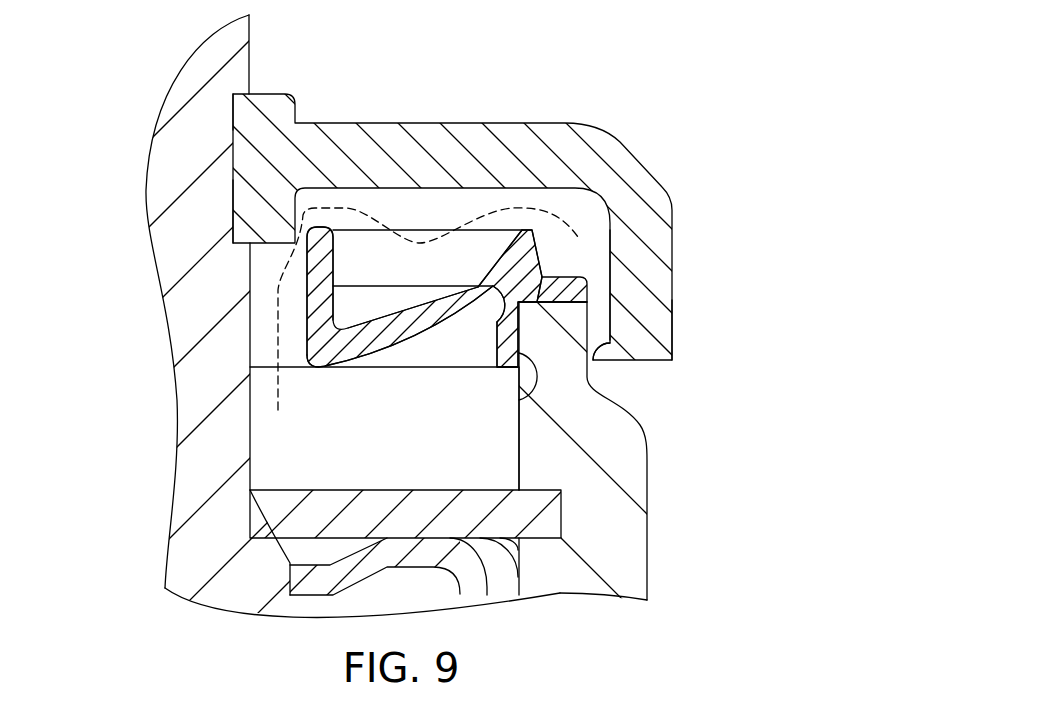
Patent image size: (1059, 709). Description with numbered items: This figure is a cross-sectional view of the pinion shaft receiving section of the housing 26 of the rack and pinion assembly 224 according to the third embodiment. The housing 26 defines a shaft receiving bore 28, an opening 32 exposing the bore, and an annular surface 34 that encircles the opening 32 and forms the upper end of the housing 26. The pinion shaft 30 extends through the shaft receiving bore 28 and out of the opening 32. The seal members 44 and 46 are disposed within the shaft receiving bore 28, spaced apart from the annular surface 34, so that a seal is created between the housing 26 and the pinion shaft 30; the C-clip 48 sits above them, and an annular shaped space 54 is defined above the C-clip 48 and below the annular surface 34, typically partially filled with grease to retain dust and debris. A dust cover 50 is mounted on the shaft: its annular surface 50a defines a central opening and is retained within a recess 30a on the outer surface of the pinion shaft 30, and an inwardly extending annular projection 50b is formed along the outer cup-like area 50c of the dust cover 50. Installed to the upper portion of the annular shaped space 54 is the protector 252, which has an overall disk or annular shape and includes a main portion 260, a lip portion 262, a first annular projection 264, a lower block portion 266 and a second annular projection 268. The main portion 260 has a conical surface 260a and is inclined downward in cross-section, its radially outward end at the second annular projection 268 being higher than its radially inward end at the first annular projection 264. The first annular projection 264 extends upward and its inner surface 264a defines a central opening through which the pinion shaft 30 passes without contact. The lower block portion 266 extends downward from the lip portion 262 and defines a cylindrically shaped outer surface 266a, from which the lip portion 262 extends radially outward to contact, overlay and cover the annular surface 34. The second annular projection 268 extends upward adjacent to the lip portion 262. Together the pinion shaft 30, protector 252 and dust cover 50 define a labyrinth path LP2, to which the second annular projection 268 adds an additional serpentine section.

The pinion shaft 30 is at (230, 42).
The recess 30a is at (235, 125).
The rack and pinion assembly 224 is at (576, 77).
The dust cover 50 is at (477, 157).
The annular surface 50a is at (233, 203).
The inwardly extending annular projection 50b is at (595, 347).
The outer cup-like area 50c is at (640, 329).
The lip portion 262 is at (570, 281).
The protector 252 is at (390, 373).
The first annular projection 264 is at (321, 246).
The inner surface 264a is at (301, 341).
The main portion 260 is at (423, 327).
The conical surface 260a is at (435, 305).
The second annular projection 268 is at (519, 241).
The opening 32 is at (493, 287).
The lower block portion 266 is at (507, 343).
The cylindrically shaped outer surface 266a is at (520, 395).
The annular surface 34 is at (549, 300).
The housing 26 is at (608, 443).
The annular shaped space 54 is at (456, 444).
The shaft receiving bore 28 is at (519, 437).
The C-clip 48 is at (535, 512).
The seal member 46 is at (473, 587).
The seal member 44 is at (507, 582).
The labyrinth path LP2 is at (278, 322).